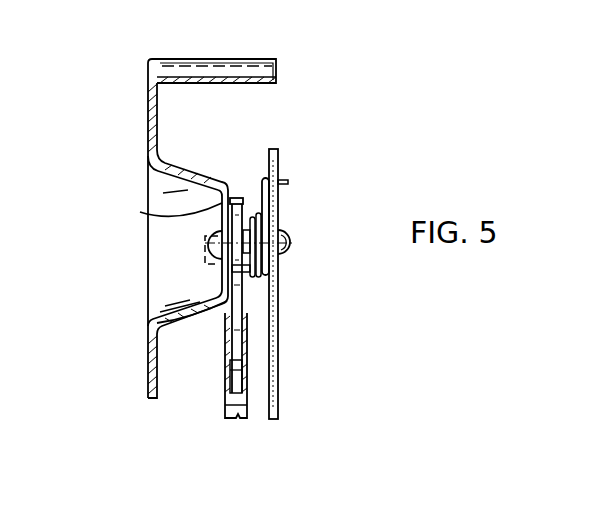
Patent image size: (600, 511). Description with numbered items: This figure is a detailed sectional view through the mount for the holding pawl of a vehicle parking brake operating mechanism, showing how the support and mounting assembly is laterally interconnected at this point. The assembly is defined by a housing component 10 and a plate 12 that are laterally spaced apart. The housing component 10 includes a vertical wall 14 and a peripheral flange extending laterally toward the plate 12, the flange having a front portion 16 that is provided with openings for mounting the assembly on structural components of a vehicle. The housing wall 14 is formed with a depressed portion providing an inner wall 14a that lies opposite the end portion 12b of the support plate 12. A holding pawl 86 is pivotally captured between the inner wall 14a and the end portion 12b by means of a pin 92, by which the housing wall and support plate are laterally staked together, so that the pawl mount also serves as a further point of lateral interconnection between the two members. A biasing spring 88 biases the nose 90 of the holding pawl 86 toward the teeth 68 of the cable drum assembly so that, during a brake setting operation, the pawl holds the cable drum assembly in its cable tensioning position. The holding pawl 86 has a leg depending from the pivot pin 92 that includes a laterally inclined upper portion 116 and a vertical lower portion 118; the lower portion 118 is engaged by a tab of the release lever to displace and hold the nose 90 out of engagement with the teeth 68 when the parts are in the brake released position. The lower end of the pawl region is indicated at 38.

The housing component 10 is at (190, 206).
The plate 12 is at (316, 277).
The end portion of support plate 12b is at (277, 166).
The vertical wall 14 is at (148, 114).
The inner wall 14a is at (218, 203).
The front portion of peripheral flange 16 is at (248, 60).
The rod end 38 is at (237, 418).
The teeth of cable drum assembly 68 is at (226, 409).
The holding pawl 86 is at (240, 198).
The biasing spring 88 is at (268, 202).
The nose of holding pawl 90 is at (237, 383).
The pin 92 is at (291, 242).
The laterally inclined upper portion 116 is at (206, 228).
The vertical lower portion 118 is at (204, 258).